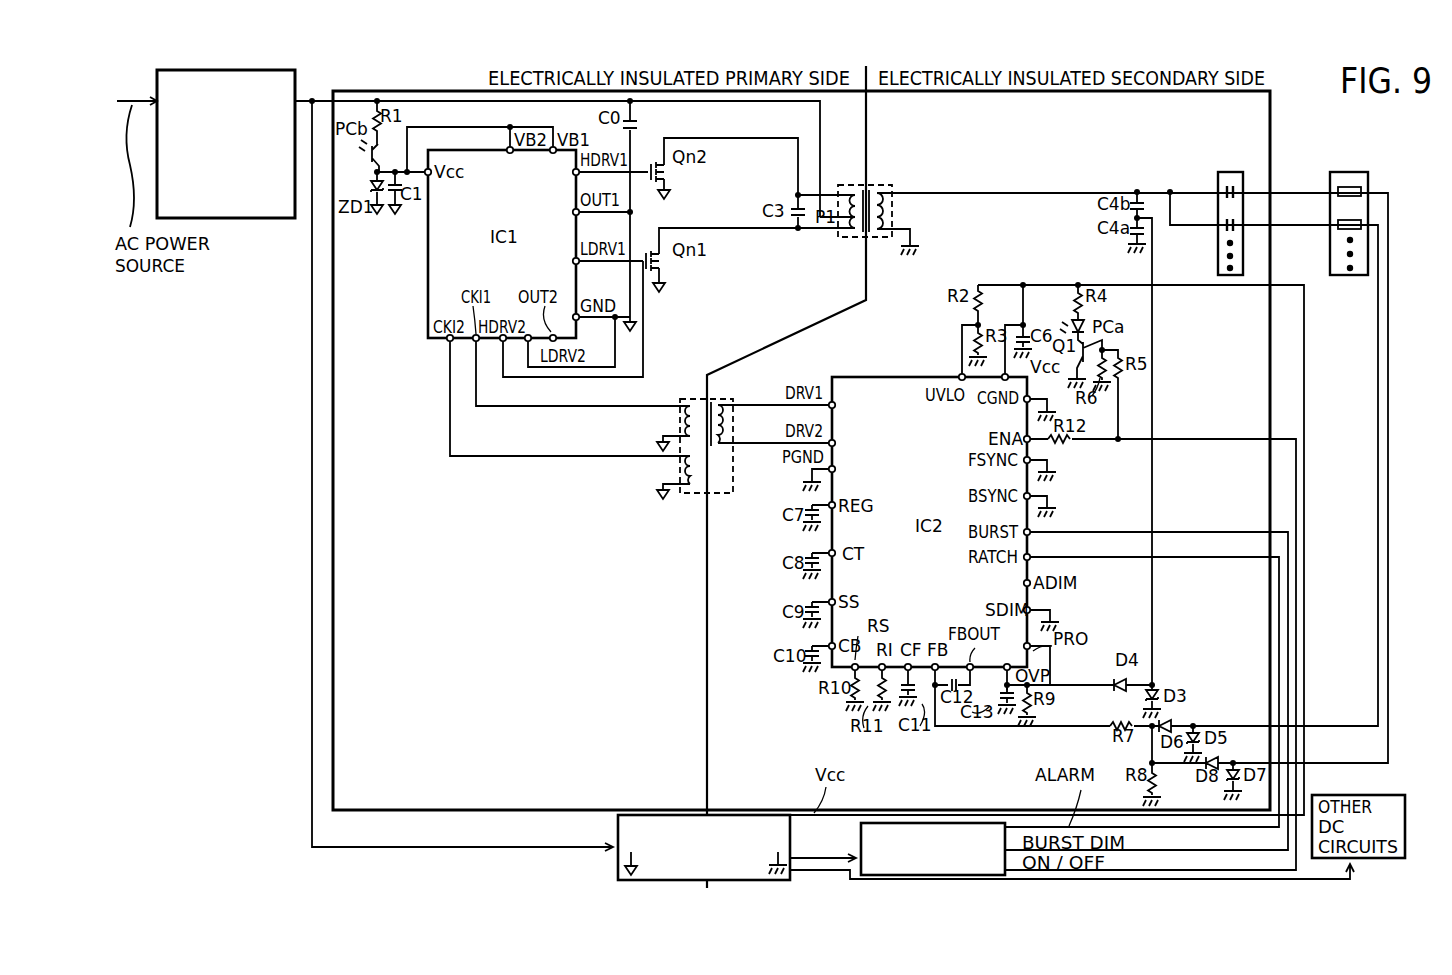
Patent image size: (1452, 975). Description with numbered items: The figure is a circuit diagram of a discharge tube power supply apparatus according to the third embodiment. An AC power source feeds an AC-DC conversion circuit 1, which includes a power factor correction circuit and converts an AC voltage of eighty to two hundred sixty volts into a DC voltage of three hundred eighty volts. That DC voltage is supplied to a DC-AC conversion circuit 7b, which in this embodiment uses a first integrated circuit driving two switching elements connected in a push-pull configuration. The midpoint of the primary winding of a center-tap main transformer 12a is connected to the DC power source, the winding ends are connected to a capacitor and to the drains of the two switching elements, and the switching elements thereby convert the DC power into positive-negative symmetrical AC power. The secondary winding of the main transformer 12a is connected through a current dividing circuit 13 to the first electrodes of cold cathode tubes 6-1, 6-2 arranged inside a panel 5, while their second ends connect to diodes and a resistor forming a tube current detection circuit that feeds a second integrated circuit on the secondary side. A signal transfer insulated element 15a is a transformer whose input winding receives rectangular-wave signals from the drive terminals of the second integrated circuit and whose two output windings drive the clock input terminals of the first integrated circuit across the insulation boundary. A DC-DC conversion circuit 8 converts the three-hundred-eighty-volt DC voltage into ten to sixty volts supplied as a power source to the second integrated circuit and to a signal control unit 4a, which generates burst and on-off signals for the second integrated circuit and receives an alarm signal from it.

The AC-DC conversion circuit 1 is at (280, 222).
The DC-AC conversion circuit 7b is at (1270, 101).
The main transformer 12a is at (888, 185).
The current dividing circuit 13 is at (1220, 172).
The panel 5 is at (1326, 195).
The cold cathode tube 6-1 is at (1342, 201).
The cold cathode tube 6-2 is at (1342, 236).
The signal transfer insulated element 15a is at (727, 496).
The DC-DC conversion circuit 8 is at (615, 862).
The signal control unit 4a is at (860, 837).